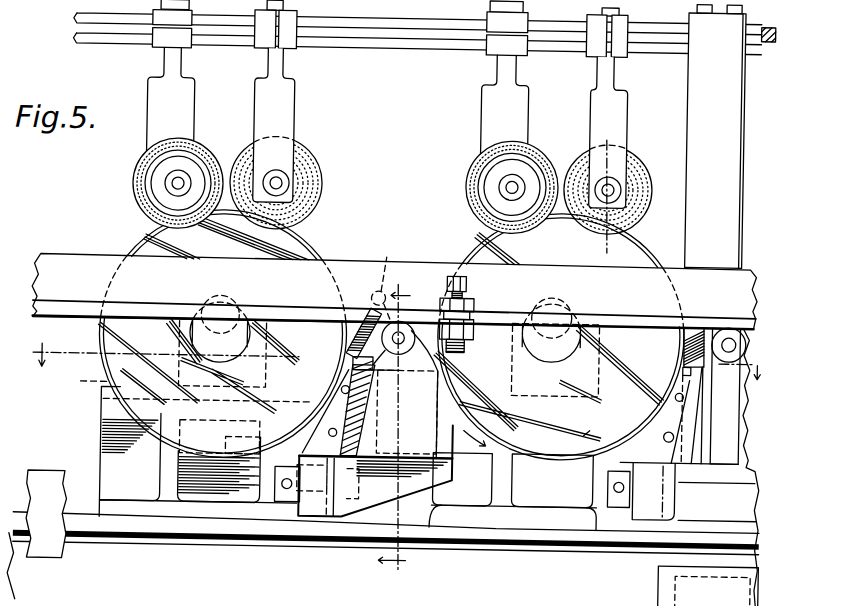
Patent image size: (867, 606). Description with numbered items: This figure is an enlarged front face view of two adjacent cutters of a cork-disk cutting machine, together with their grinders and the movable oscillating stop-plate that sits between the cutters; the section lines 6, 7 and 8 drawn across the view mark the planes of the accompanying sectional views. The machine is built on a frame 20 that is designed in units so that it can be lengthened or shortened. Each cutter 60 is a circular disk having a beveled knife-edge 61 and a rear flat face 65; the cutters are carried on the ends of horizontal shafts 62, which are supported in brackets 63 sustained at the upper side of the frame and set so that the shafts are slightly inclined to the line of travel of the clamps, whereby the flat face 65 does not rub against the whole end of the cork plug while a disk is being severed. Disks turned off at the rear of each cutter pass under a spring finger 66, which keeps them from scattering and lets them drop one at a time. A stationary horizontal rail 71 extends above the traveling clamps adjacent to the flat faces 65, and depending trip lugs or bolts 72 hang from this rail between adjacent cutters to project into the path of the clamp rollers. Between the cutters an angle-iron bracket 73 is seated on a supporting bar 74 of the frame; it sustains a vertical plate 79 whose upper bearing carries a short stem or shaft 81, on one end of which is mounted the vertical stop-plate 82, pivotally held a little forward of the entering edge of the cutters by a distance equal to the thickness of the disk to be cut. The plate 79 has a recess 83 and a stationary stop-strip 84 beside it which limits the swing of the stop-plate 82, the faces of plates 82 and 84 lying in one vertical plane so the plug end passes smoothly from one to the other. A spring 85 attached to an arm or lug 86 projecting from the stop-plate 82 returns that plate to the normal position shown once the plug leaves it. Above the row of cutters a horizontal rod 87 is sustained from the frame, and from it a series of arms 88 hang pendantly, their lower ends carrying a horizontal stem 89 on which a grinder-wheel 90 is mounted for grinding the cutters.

The section line 6- 6 is at (393, 357).
The section line 7- 7 is at (395, 433).
The section line 8- 8 is at (605, 195).
The frame 20 is at (385, 461).
The cutter 60 is at (141, 247).
The beveled knife-edge 61 is at (488, 246).
The horizontal shaft 62 is at (222, 336).
The bracket 63 is at (102, 414).
The flat face 65 is at (581, 434).
The spring finger 66 is at (232, 446).
The horizontal rail 71 is at (288, 321).
The trip lug or bolt 72 is at (463, 343).
The angle-iron bracket 73 is at (468, 374).
The supporting bar 74 is at (285, 508).
The vertical plate 79 is at (456, 428).
The stem or shaft 81 is at (404, 321).
The stop-plate 82 is at (744, 409).
The recess 83 is at (372, 390).
The stop-strip 84 is at (452, 418).
The spring 85 is at (366, 310).
The arm or lug 86 is at (380, 290).
The horizontal rod 87 is at (418, 49).
The arm 88 is at (263, 96).
The horizontal stem 89 is at (181, 183).
The grinder-wheel 90 is at (133, 190).